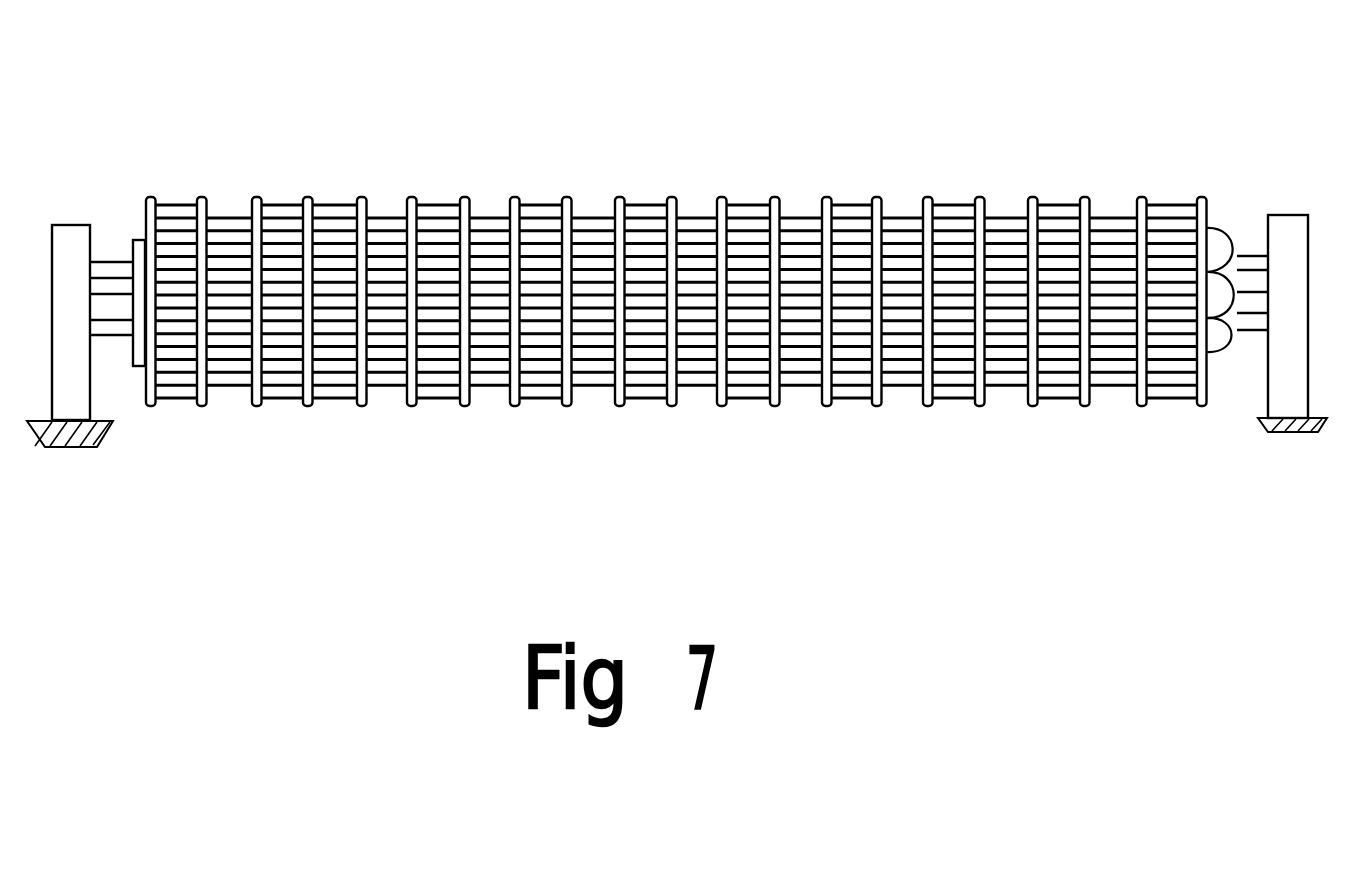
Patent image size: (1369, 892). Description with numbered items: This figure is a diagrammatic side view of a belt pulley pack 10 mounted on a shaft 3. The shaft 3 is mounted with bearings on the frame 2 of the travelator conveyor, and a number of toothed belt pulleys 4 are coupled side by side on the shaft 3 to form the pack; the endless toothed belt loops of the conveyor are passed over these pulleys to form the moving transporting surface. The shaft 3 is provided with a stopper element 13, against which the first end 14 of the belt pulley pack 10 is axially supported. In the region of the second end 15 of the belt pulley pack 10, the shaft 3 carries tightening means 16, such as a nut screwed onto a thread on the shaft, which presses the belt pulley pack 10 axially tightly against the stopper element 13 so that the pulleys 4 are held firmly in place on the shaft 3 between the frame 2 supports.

The frame 2 is at (82, 447).
The shaft 3 is at (110, 283).
The belt pulleys 4 is at (485, 390).
The belt pulley pack 10 is at (688, 134).
The stopper element 13 is at (140, 240).
The first end 14 is at (153, 433).
The second end 15 is at (1213, 423).
The tightening means 16 is at (1210, 260).